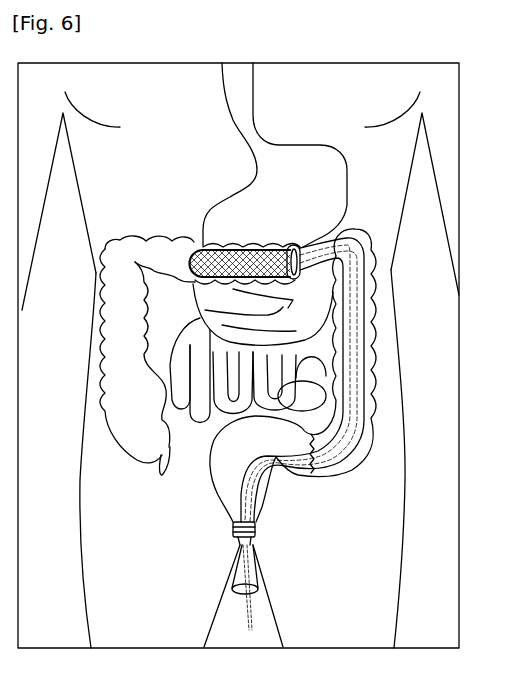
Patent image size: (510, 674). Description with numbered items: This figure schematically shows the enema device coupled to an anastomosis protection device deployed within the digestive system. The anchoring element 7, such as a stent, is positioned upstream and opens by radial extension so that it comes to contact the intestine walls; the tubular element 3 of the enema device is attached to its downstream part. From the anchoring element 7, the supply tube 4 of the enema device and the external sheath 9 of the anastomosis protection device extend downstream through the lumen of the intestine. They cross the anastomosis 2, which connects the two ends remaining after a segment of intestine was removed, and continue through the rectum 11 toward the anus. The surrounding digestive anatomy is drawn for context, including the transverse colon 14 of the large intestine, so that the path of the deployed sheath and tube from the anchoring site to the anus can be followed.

The transverse colon 14 is at (181, 258).
The anchoring element 7 is at (244, 247).
The tubular element 3 is at (294, 245).
The supply tube 4 is at (370, 236).
The external sheath 9 is at (363, 333).
The anastomosis 2 is at (316, 466).
The rectum 11 is at (258, 533).